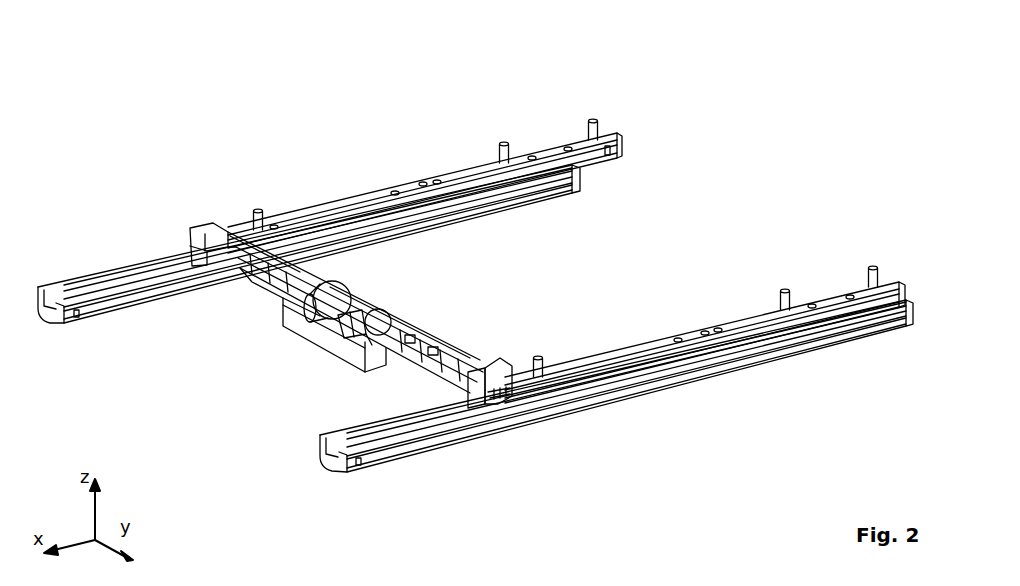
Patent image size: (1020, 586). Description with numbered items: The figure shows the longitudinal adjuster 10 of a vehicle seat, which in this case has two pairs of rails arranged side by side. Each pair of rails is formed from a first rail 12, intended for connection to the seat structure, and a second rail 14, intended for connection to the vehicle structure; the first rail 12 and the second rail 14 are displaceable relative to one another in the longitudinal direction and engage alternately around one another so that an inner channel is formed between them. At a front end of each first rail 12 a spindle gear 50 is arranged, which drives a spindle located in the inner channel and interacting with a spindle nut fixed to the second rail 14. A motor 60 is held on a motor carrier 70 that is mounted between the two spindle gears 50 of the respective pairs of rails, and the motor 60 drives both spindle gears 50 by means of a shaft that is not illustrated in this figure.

The longitudinal adjuster 10 is at (250, 149).
The first rail 12 is at (460, 175).
The second rail 14 is at (485, 200).
The spindle gear 50 is at (495, 395).
The motor 60 is at (352, 303).
The motor carrier 70 is at (378, 358).